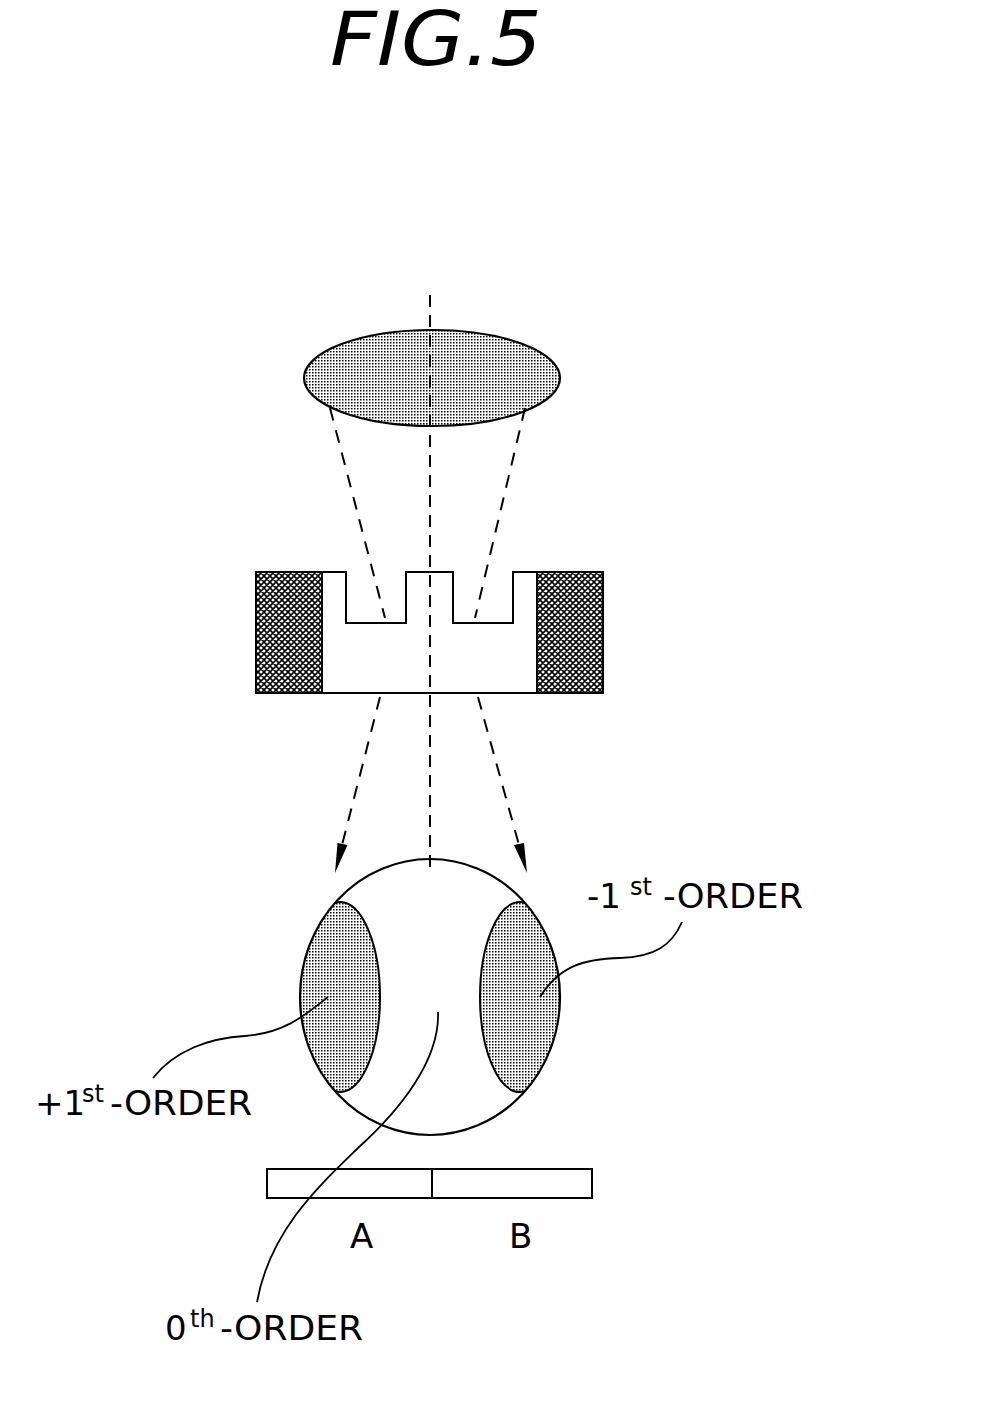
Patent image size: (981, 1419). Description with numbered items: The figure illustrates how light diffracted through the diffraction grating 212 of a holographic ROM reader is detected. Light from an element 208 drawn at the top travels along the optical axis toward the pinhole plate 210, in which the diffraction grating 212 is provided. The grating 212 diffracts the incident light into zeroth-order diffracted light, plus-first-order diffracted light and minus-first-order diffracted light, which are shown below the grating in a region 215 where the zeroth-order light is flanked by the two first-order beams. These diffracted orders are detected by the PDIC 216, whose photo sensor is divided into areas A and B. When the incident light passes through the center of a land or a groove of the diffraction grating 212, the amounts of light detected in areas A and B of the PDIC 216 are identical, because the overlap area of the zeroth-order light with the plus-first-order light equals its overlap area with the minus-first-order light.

The collimating lens 208 is at (308, 370).
The pinhole plate 210 is at (273, 610).
The diffraction grating 212 is at (526, 675).
The objective lens aperture 215 is at (566, 1057).
The PDIC 216 is at (592, 1177).